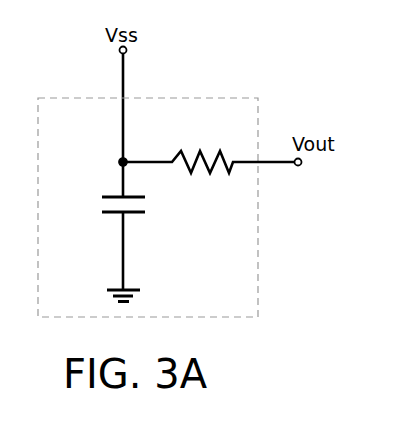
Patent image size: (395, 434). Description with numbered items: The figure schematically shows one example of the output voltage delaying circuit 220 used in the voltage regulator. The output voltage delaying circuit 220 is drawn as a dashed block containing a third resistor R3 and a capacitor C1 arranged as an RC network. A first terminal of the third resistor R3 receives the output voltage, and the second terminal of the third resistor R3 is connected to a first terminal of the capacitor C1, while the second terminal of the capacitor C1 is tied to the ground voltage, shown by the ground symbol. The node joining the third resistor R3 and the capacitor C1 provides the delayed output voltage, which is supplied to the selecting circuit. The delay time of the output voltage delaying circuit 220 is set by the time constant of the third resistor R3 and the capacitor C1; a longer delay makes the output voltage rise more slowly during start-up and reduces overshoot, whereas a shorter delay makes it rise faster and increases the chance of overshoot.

The output voltage delaying circuit 220 is at (243, 302).
The third resistor R3 is at (209, 149).
The capacitor C1 is at (105, 226).